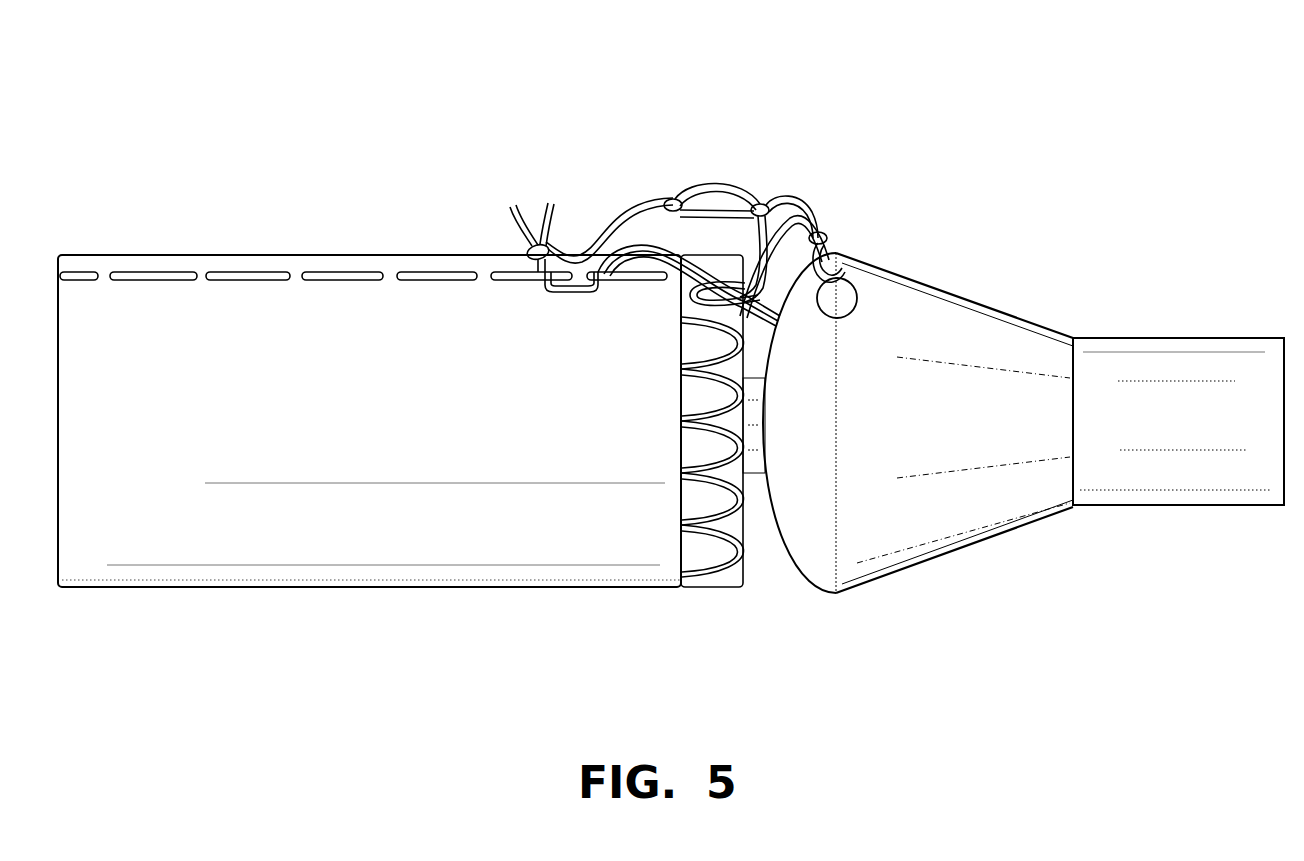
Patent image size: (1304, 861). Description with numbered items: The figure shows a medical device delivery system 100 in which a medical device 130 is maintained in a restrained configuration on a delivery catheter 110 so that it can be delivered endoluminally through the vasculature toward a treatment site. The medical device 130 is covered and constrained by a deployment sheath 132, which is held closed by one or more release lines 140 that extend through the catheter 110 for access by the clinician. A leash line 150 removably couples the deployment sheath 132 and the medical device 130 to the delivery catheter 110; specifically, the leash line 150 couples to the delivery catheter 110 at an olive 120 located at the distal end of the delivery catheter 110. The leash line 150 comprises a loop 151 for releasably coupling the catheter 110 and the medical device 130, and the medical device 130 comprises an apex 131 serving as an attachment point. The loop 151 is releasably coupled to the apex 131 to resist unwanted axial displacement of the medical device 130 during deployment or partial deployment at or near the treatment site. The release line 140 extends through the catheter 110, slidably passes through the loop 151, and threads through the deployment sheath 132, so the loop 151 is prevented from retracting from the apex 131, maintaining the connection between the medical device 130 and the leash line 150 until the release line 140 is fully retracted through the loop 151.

The medical device delivery system 100 is at (1073, 46).
The delivery catheter 110 is at (1158, 338).
The olive 120 is at (963, 293).
The medical device 130 is at (593, 588).
The apex 131 is at (712, 278).
The deployment sheath 132 is at (283, 545).
The release line 140 is at (638, 242).
The leash line 150 is at (735, 180).
The loop 151 is at (680, 298).